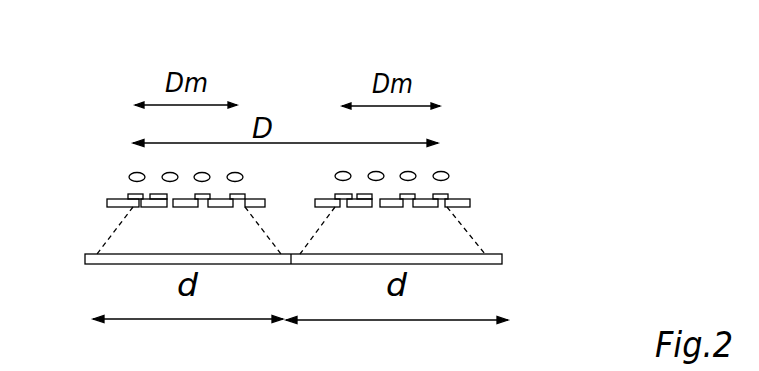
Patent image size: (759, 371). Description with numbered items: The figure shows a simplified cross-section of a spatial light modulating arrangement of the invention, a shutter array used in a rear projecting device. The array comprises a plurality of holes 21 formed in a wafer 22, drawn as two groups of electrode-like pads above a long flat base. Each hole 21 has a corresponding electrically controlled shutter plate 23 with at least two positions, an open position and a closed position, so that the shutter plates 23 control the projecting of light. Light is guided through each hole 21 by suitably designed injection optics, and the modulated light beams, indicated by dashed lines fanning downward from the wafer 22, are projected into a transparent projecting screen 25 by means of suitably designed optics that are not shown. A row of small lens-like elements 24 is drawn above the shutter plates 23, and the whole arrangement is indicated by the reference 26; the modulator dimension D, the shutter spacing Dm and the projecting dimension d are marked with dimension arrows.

The hole 21 is at (134, 207).
The wafer 22 is at (108, 199).
The shutter plate 23 is at (130, 194).
The microlens 24 is at (137, 172).
The transparent projecting screen 25 is at (96, 264).
The display unit 26 is at (276, 170).